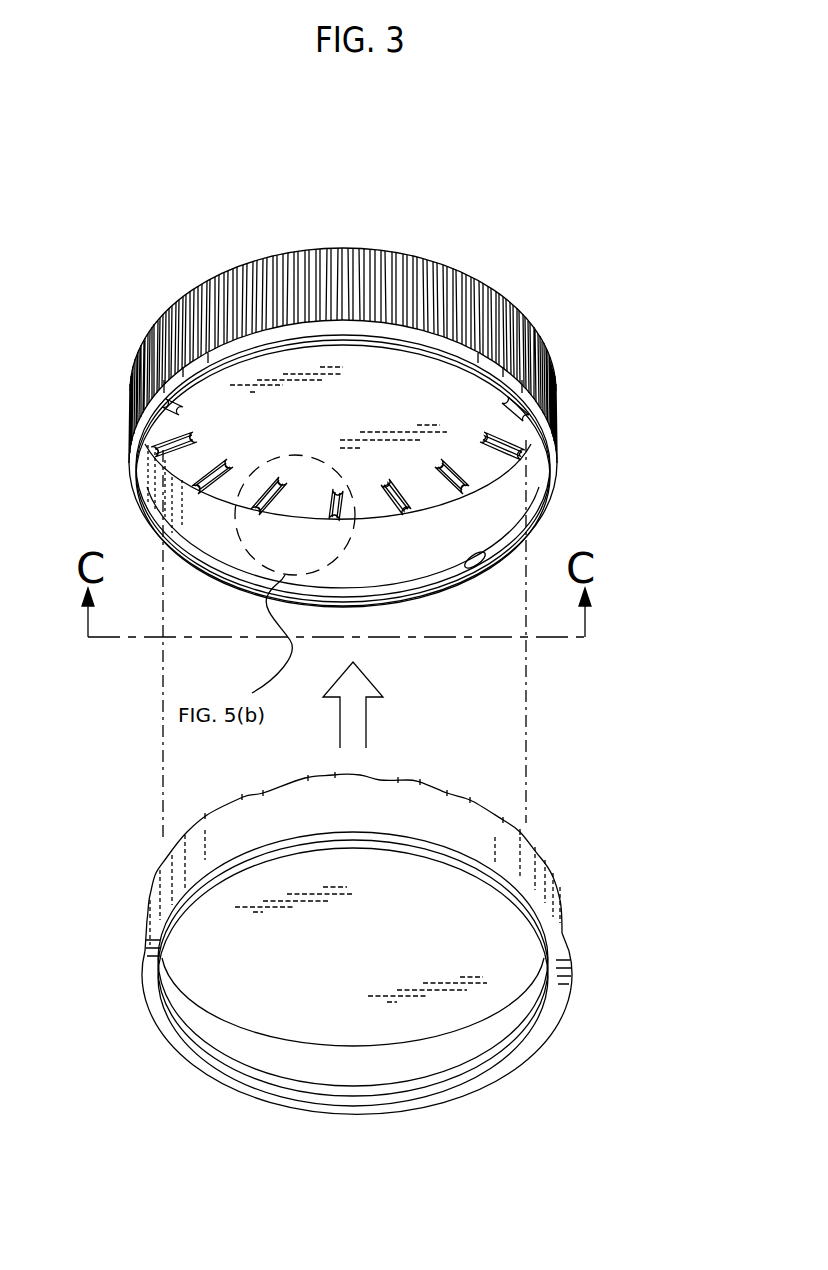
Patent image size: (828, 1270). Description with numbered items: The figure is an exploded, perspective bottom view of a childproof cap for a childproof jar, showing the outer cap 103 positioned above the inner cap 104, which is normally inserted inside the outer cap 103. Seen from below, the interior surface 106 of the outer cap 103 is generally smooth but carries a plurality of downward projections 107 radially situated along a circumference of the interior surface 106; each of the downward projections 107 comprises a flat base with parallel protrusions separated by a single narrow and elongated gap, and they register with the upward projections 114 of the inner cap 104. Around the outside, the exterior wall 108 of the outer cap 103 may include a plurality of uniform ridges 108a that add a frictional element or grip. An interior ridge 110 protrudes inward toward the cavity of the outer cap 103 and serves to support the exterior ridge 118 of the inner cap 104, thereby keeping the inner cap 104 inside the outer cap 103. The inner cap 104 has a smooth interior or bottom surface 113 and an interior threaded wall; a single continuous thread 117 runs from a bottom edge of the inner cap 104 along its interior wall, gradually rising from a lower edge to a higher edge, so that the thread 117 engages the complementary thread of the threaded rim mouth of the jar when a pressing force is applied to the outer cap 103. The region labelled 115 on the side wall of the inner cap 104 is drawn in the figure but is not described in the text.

The outer cap 103 is at (520, 262).
The inner cap 104 is at (580, 855).
The interior surface 106 is at (388, 355).
The downward projections 107 is at (353, 522).
The exterior wall 108 is at (128, 407).
The uniform ridges 108a is at (556, 350).
The interior ridge 110 is at (478, 552).
The bottom surface 113 is at (347, 922).
The upward projections 114 is at (418, 780).
The side wall of ring 115 is at (250, 828).
The thread 117 is at (395, 1085).
The exterior ridge 118 is at (150, 938).